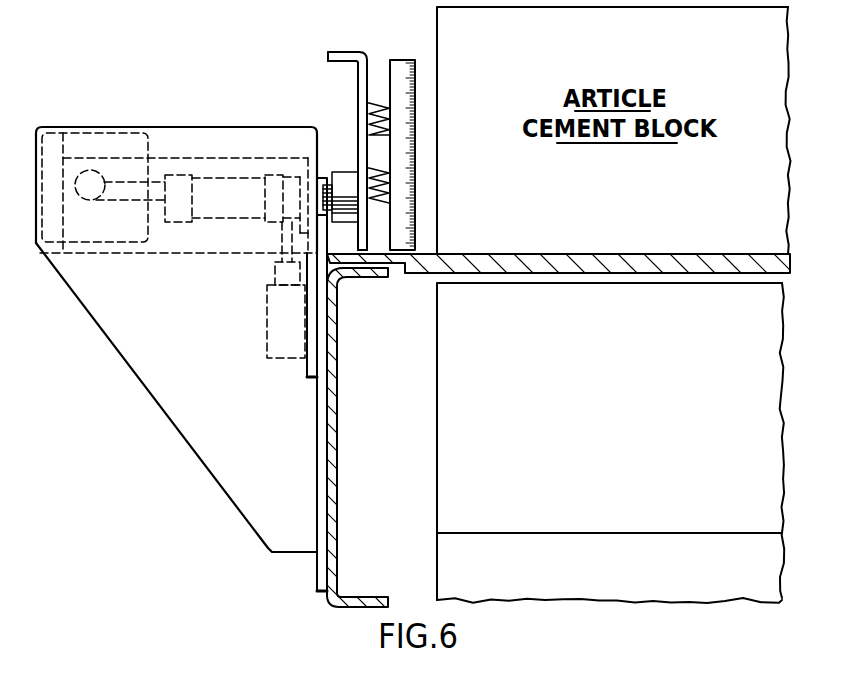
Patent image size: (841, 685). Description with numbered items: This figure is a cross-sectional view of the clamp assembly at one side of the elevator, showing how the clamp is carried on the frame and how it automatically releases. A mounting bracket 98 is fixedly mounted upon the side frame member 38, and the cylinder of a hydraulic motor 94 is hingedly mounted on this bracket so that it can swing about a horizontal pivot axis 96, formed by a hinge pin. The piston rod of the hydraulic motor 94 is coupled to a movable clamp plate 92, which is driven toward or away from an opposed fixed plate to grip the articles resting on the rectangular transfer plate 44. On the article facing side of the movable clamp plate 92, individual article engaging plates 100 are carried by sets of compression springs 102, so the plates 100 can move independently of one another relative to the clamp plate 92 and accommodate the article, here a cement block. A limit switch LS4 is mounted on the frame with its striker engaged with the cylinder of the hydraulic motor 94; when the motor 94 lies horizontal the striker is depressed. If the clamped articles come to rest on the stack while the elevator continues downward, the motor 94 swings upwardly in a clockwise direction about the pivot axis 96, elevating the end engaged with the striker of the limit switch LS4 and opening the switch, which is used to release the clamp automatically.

The side frame member 38 is at (336, 452).
The transfer plate 44 is at (610, 266).
The movable clamp plate 92 is at (358, 98).
The hydraulic motor 94 is at (234, 178).
The horizontal pivot axis 96 is at (100, 180).
The mounting bracket 98 is at (106, 326).
The article engaging plates 100 is at (405, 103).
The compression springs 102 is at (373, 103).
The limit switch LS4 is at (262, 314).